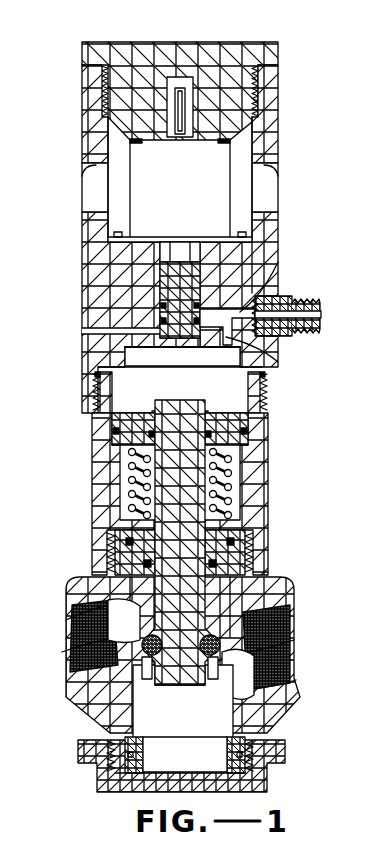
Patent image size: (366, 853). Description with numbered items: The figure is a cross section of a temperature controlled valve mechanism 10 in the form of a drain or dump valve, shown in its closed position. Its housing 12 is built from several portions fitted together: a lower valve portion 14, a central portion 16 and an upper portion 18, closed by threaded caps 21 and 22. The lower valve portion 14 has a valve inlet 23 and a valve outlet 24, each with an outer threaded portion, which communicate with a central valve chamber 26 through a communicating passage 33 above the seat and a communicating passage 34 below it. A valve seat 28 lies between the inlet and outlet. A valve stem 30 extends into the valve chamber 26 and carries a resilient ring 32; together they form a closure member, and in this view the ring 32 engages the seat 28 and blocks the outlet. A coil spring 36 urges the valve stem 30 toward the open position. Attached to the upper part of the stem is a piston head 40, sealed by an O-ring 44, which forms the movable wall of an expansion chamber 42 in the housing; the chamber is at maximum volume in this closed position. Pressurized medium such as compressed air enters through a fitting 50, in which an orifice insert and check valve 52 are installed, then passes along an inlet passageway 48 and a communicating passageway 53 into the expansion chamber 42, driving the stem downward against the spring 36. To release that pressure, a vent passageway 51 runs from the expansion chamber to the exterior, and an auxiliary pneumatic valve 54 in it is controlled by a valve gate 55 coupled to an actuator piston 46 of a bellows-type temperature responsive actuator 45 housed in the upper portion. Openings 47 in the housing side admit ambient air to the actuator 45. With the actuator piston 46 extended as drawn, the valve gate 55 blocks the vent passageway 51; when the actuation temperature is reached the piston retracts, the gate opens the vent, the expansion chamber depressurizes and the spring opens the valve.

The temperature controlled valve mechanism 10 is at (66, 100).
The housing 12 is at (82, 307).
The lower valve portion 14 is at (76, 592).
The central portion 16 is at (258, 492).
The upper portion 18 is at (280, 230).
The threaded cap 21 is at (205, 57).
The threaded cap 22 is at (286, 756).
The valve inlet 23 is at (112, 606).
The valve outlet 24 is at (286, 642).
The central valve chamber 26 is at (135, 709).
The valve seat 28 is at (236, 606).
The valve stem 30 is at (172, 478).
The resilient ring 32 is at (118, 598).
The communicating passage 33 is at (120, 622).
The communicating passage 34 is at (248, 672).
The spring 36 is at (230, 472).
The piston head 40 is at (235, 416).
The expansion chamber 42 is at (115, 398).
The O-ring 44 is at (112, 431).
The bellows-type temperature responsive actuator 45 is at (221, 165).
The actuator piston 46 is at (180, 247).
The openings 47 is at (82, 172).
The inlet passageway 48 is at (244, 311).
The fitting 50 is at (286, 297).
The vent passageway 51 is at (212, 230).
The orifice insert and check valve 52 is at (322, 312).
The communicating passageway 53 is at (226, 337).
The auxiliary pneumatic valve 54 is at (152, 270).
The valve gate 55 is at (168, 291).